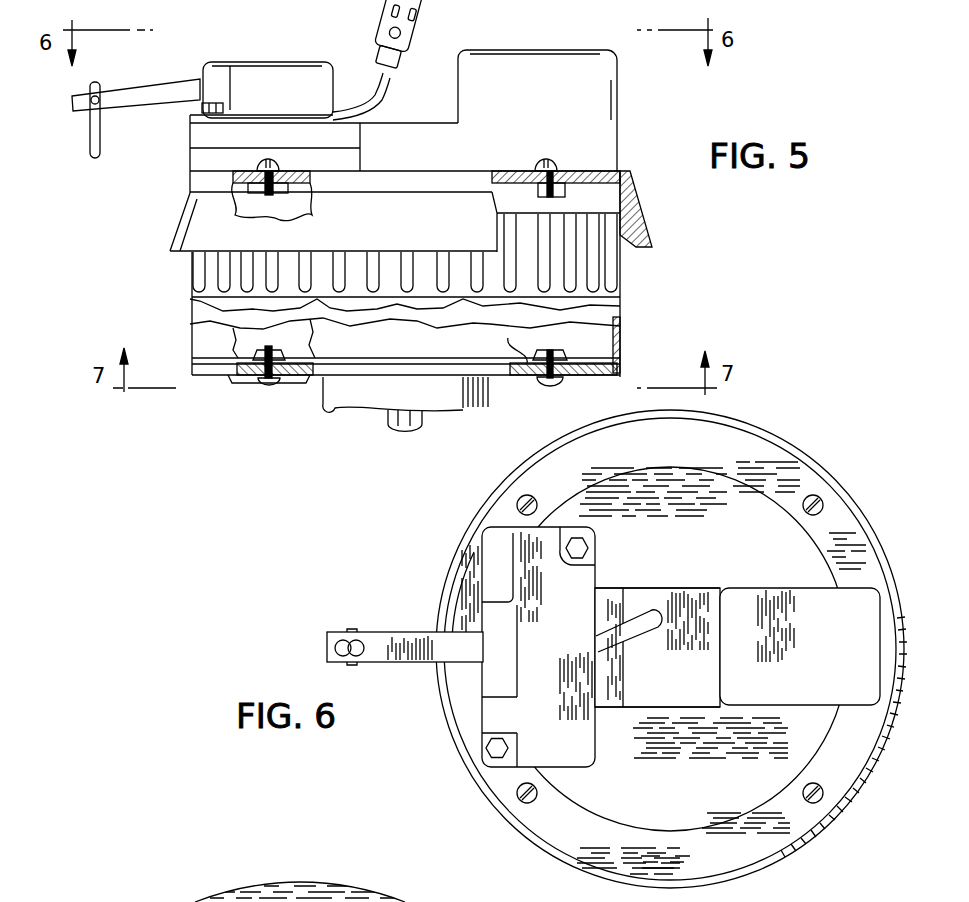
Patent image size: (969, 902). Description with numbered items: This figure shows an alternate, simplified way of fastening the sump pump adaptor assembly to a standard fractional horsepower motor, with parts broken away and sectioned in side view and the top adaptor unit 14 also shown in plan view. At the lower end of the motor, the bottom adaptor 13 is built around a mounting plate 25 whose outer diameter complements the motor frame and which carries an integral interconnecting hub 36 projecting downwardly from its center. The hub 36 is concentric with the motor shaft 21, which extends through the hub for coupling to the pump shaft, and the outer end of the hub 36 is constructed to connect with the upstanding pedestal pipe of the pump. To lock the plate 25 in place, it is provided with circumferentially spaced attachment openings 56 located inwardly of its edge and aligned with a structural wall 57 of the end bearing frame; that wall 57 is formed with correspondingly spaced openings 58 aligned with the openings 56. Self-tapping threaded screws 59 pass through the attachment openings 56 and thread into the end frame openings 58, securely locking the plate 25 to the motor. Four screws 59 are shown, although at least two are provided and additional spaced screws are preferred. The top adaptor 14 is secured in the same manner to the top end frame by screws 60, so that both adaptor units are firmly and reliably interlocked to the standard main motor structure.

In FIG. 5, the bottom adaptor 13 is at (606, 376).
In FIG. 5, the top adaptor 14 is at (636, 203).
In FIG. 6, the top adaptor 14 is at (813, 459).
In FIG. 5, the shaft 21 is at (409, 418).
In FIG. 5, the mounting plate 25 is at (620, 366).
In FIG. 5, the interconnecting hub 36 is at (465, 411).
In FIG. 5, the attachment openings 56 is at (561, 368).
In FIG. 5, the structural wall 57 is at (512, 343).
In FIG. 5, the openings 58 is at (553, 363).
In FIG. 5, the self-tapping threaded screws 59 is at (266, 385).
In FIG. 5, the screws 60 is at (272, 158).
In FIG. 6, the screws 60 is at (803, 500).